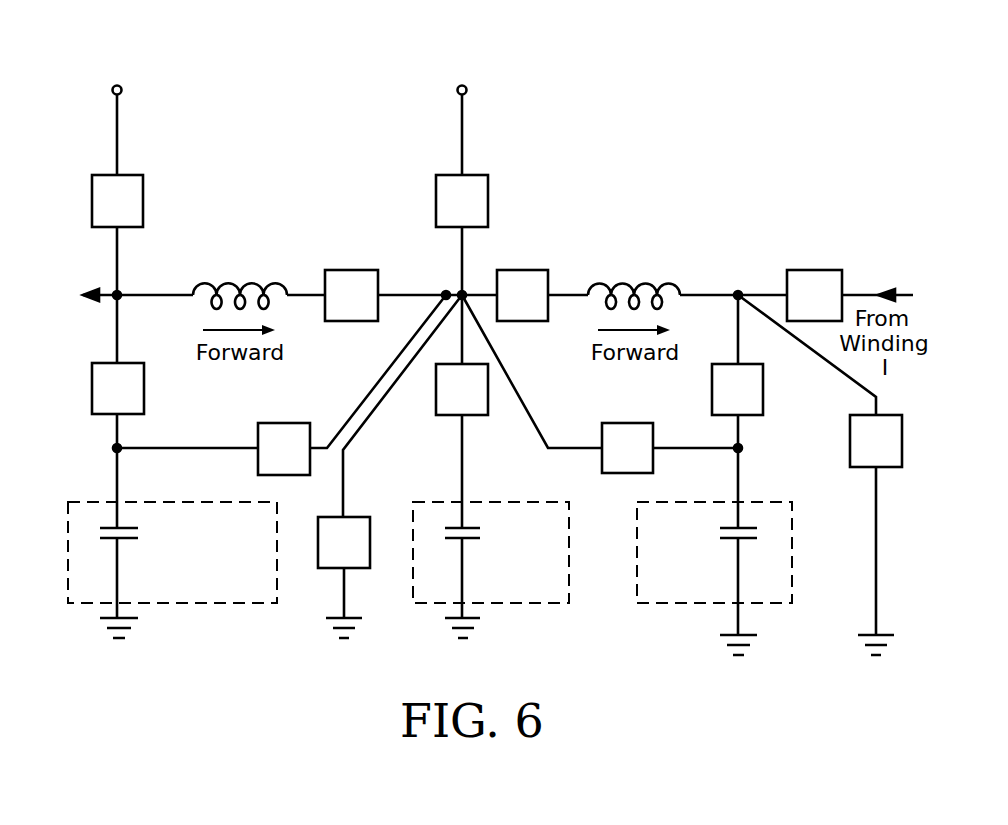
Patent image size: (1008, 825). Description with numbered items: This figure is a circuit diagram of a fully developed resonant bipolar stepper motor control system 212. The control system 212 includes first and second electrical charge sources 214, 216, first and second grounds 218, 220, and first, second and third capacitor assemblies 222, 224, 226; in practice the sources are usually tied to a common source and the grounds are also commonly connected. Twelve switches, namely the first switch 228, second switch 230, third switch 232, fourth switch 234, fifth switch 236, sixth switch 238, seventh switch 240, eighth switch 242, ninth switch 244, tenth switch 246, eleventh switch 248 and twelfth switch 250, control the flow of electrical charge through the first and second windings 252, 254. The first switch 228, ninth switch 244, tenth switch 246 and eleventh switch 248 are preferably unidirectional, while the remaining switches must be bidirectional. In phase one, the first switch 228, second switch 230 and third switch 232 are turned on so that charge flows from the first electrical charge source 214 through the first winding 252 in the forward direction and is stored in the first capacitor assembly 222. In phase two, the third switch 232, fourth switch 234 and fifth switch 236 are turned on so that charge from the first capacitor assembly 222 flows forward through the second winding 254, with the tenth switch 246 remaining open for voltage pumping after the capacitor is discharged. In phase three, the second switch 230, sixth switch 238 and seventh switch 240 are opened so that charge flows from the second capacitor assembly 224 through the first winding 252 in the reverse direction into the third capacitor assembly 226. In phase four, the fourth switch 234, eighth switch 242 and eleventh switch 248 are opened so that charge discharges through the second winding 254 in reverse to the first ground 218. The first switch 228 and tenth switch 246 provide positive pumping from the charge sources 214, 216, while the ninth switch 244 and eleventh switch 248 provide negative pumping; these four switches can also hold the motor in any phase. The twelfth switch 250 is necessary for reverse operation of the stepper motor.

The control system 212 is at (672, 193).
The first electrical charge source 214 is at (133, 62).
The second electrical charge source 216 is at (492, 65).
The first ground 218 is at (365, 633).
The second ground 220 is at (848, 640).
The first capacitor assembly 222 is at (517, 603).
The second capacitor assembly 224 is at (686, 603).
The third capacitor assembly 226 is at (200, 603).
The first switch 228 is at (143, 195).
The second switch 230 is at (362, 269).
The third switch 232 is at (490, 405).
The fourth switch 234 is at (520, 269).
The fifth switch 236 is at (763, 388).
The sixth switch 238 is at (653, 465).
The seventh switch 240 is at (146, 372).
The eighth switch 242 is at (815, 269).
The ninth switch 244 is at (850, 450).
The tenth switch 246 is at (488, 192).
The eleventh switch 248 is at (370, 552).
The twelfth switch 250 is at (258, 445).
The first winding 252 is at (278, 285).
The second winding 254 is at (675, 285).